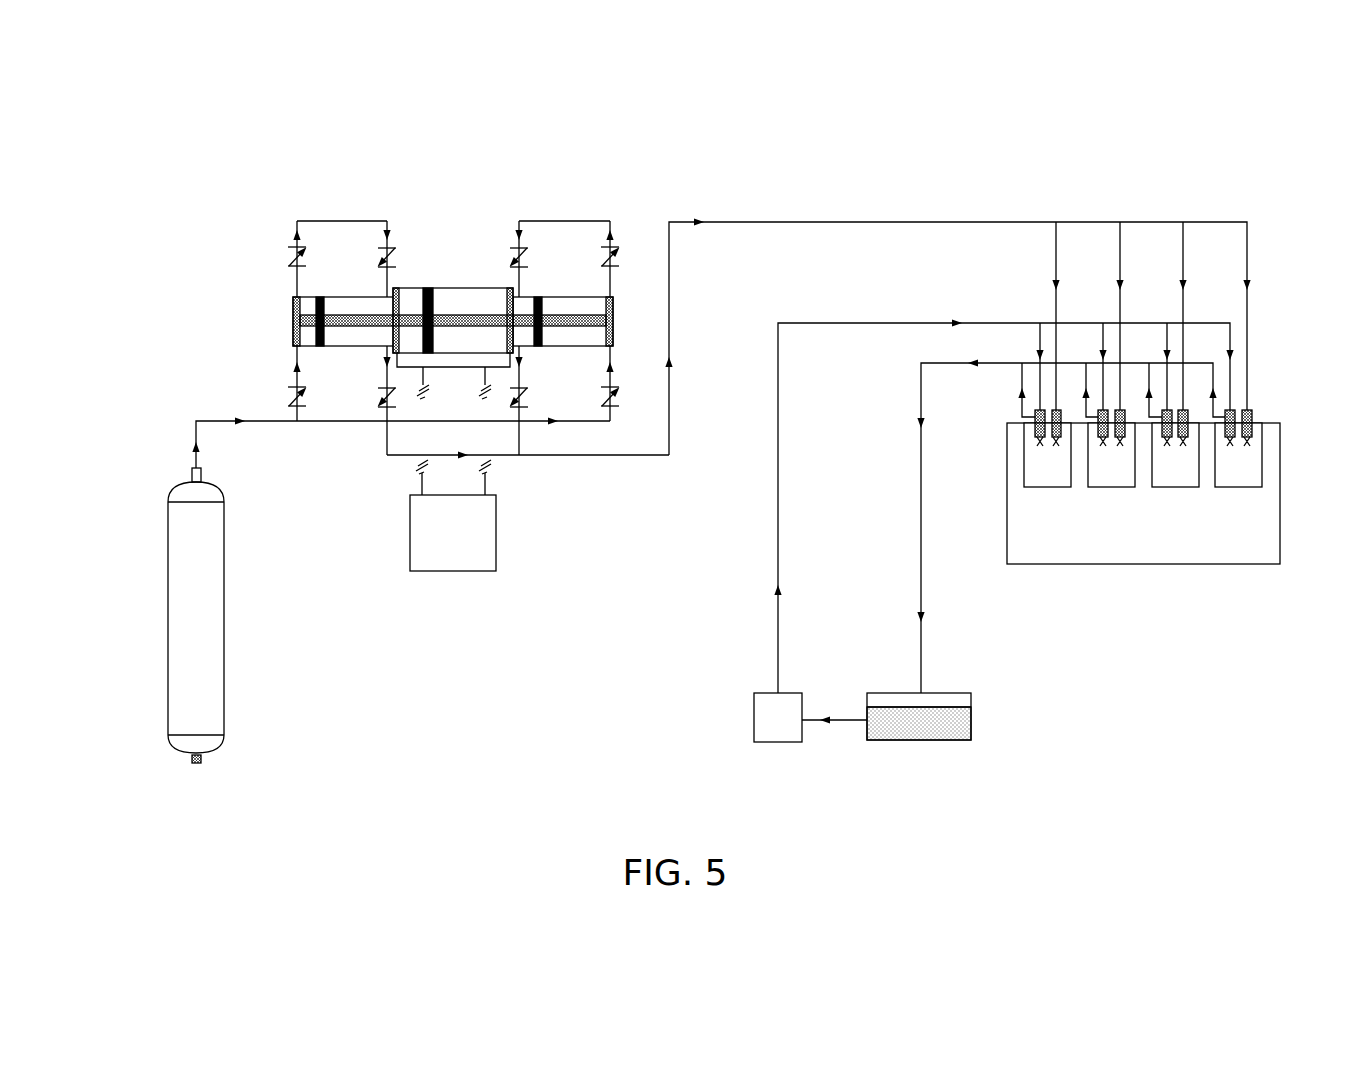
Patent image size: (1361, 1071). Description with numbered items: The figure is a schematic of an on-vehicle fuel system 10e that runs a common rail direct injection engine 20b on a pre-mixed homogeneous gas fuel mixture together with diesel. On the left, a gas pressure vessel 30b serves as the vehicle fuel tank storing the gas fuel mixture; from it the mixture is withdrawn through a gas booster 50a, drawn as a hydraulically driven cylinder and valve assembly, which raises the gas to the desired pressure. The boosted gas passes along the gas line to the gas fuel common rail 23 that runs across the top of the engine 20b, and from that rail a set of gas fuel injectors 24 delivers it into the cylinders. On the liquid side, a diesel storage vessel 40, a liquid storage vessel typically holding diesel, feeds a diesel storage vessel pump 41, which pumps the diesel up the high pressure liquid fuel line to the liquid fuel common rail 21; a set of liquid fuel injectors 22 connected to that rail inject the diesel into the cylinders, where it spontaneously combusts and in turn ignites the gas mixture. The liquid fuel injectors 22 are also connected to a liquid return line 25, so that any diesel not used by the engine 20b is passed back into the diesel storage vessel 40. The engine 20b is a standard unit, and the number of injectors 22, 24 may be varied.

The fuel system 10e is at (1097, 149).
The gas booster 50a is at (347, 262).
The gas pressure vessel 30b is at (186, 657).
The common rail direct injection engine 20b is at (1276, 504).
The liquid fuel common rail 21 is at (996, 497).
The liquid fuel injectors 22 is at (1036, 428).
The gas fuel common rail 23 is at (957, 328).
The gas fuel injectors 24 is at (1055, 411).
The liquid return line 25 is at (1064, 526).
The diesel storage vessel 40 is at (966, 730).
The diesel storage vessel pump 41 is at (770, 703).